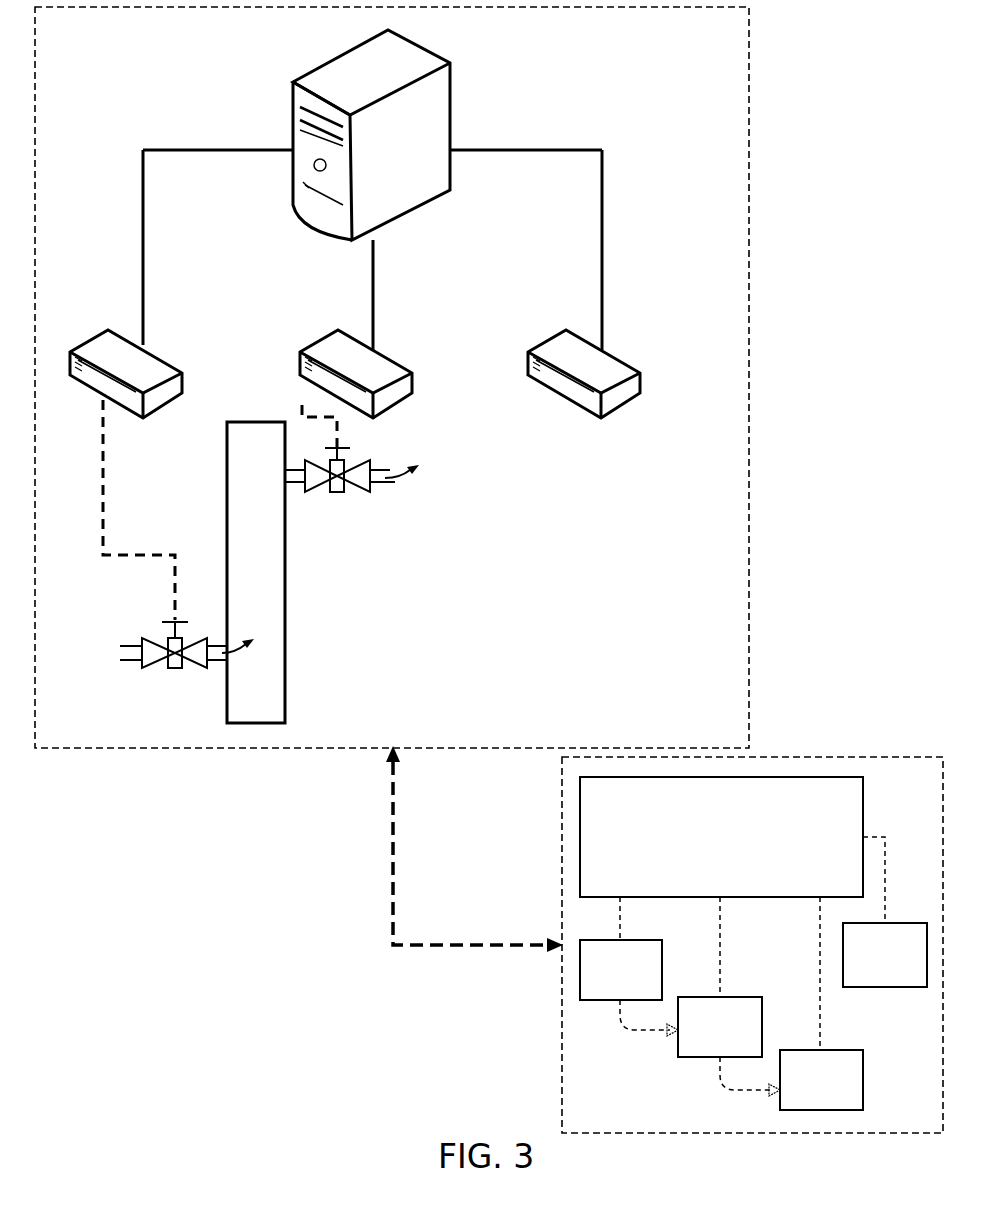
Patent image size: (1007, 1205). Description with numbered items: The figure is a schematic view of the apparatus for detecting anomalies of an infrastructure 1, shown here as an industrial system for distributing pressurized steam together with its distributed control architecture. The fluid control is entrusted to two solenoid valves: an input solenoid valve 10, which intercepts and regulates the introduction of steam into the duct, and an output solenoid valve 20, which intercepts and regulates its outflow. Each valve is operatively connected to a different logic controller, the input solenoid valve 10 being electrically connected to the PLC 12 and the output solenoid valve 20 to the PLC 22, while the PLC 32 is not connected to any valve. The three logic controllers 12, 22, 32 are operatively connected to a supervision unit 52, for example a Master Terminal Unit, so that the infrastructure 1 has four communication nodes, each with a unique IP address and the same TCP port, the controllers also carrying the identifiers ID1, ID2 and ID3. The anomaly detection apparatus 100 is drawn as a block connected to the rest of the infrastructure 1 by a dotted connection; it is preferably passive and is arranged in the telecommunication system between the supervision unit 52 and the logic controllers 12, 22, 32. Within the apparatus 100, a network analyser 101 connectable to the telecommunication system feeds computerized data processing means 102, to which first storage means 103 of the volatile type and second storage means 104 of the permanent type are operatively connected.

The infrastructure 1 is at (750, 375).
The supervision unit 52 is at (410, 122).
The logic controller 12 is at (100, 350).
The logic controller 22 is at (320, 353).
The logic controller 32 is at (550, 353).
The input solenoid valve 10 is at (196, 603).
The output solenoid valve 20 is at (355, 518).
The anomaly detection apparatus 100 is at (732, 913).
The network analyser 101 is at (629, 988).
The computerized data processing means 102 is at (729, 1046).
The first storage means 103 is at (821, 1080).
The second storage means 104 is at (885, 955).